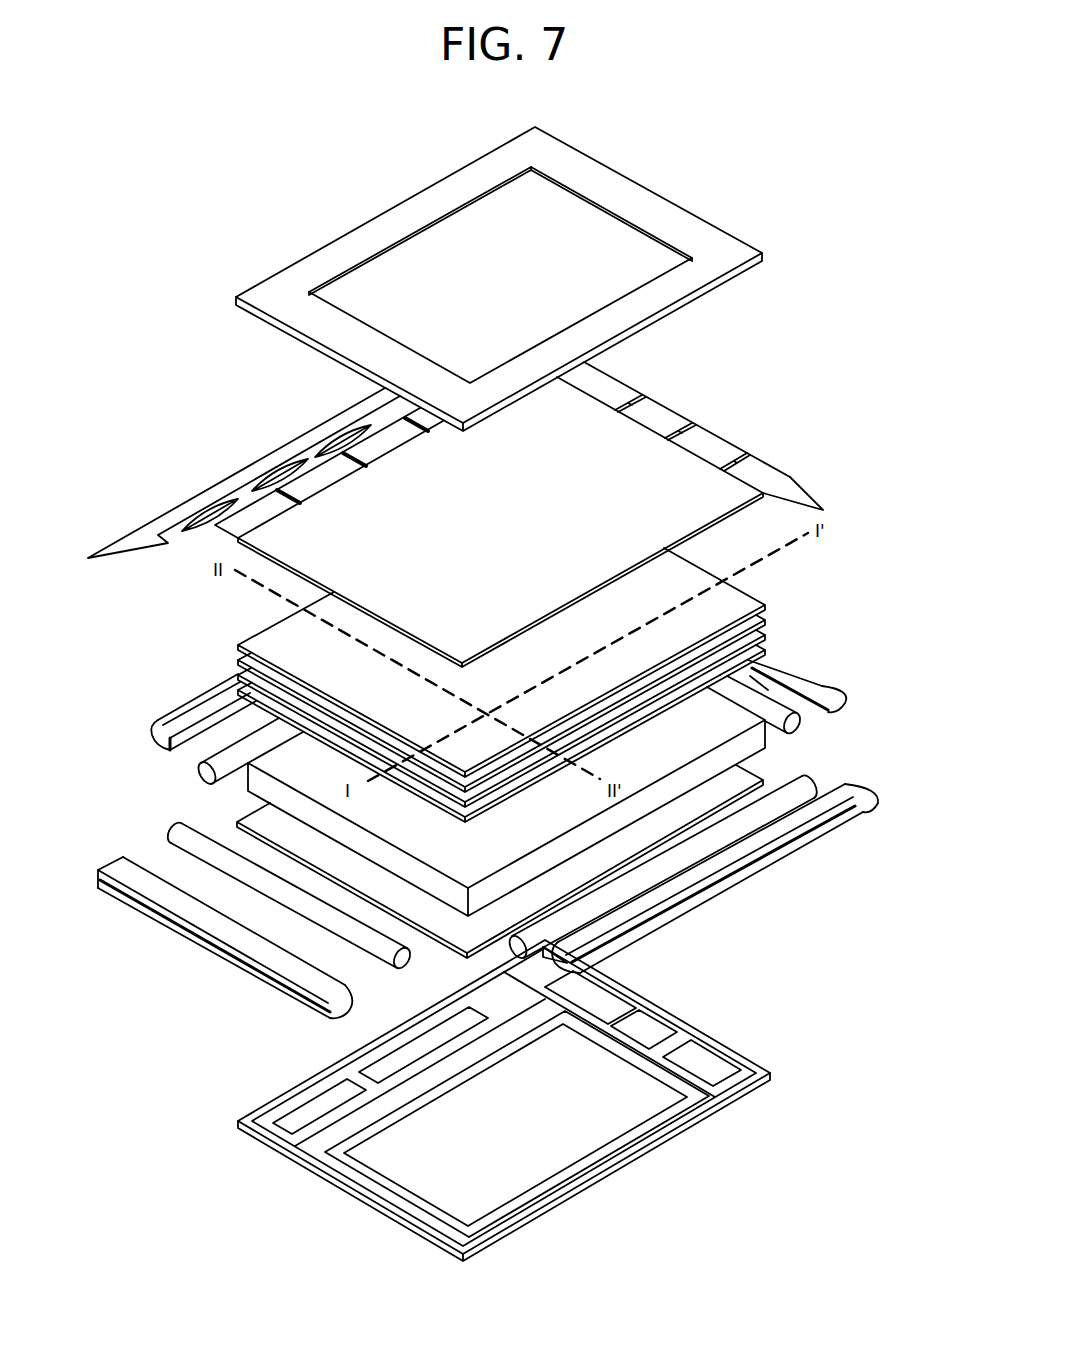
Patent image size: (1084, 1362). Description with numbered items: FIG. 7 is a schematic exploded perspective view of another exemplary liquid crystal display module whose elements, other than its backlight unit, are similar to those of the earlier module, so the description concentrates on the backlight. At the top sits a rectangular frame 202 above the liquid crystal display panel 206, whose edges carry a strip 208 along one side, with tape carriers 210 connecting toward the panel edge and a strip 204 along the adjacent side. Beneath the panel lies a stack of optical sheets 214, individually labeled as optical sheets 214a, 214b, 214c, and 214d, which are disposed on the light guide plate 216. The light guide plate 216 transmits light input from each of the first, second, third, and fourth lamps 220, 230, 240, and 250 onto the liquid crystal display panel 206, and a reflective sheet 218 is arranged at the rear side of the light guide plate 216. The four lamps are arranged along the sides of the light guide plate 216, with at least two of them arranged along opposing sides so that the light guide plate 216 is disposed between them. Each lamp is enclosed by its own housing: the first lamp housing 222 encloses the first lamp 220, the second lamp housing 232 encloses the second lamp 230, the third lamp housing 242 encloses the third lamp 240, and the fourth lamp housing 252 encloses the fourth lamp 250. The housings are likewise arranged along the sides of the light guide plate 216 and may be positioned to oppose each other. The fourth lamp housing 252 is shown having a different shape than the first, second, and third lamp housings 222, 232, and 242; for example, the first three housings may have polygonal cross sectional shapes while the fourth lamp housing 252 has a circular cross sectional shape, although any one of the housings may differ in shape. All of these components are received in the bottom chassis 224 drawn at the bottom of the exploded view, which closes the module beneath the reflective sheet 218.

The top chassis 202 is at (735, 243).
The liquid crystal display panel 204 is at (800, 493).
The liquid crystal display panel 206 is at (617, 412).
The printed circuit board (gate side) 208 is at (347, 432).
The tape carrier package 210 is at (273, 470).
The optical sheets 214 is at (592, 685).
The optical sheet 214a is at (765, 603).
The optical sheet 214b is at (765, 620).
The optical sheet 214c is at (765, 636).
The optical sheet 214d is at (765, 656).
The light guide plate 216 is at (478, 895).
The reflective sheet 218 is at (678, 813).
The first lamp 220 is at (381, 950).
The first lamp housing 222 is at (312, 1010).
The bottom chassis 224 is at (743, 1063).
The second lamp 230 is at (812, 786).
The second lamp housing 232 is at (865, 805).
The third lamp 240 is at (203, 774).
The third lamp housing 242 is at (168, 741).
The fourth lamp 250 is at (797, 730).
The fourth lamp housing 252 is at (847, 693).